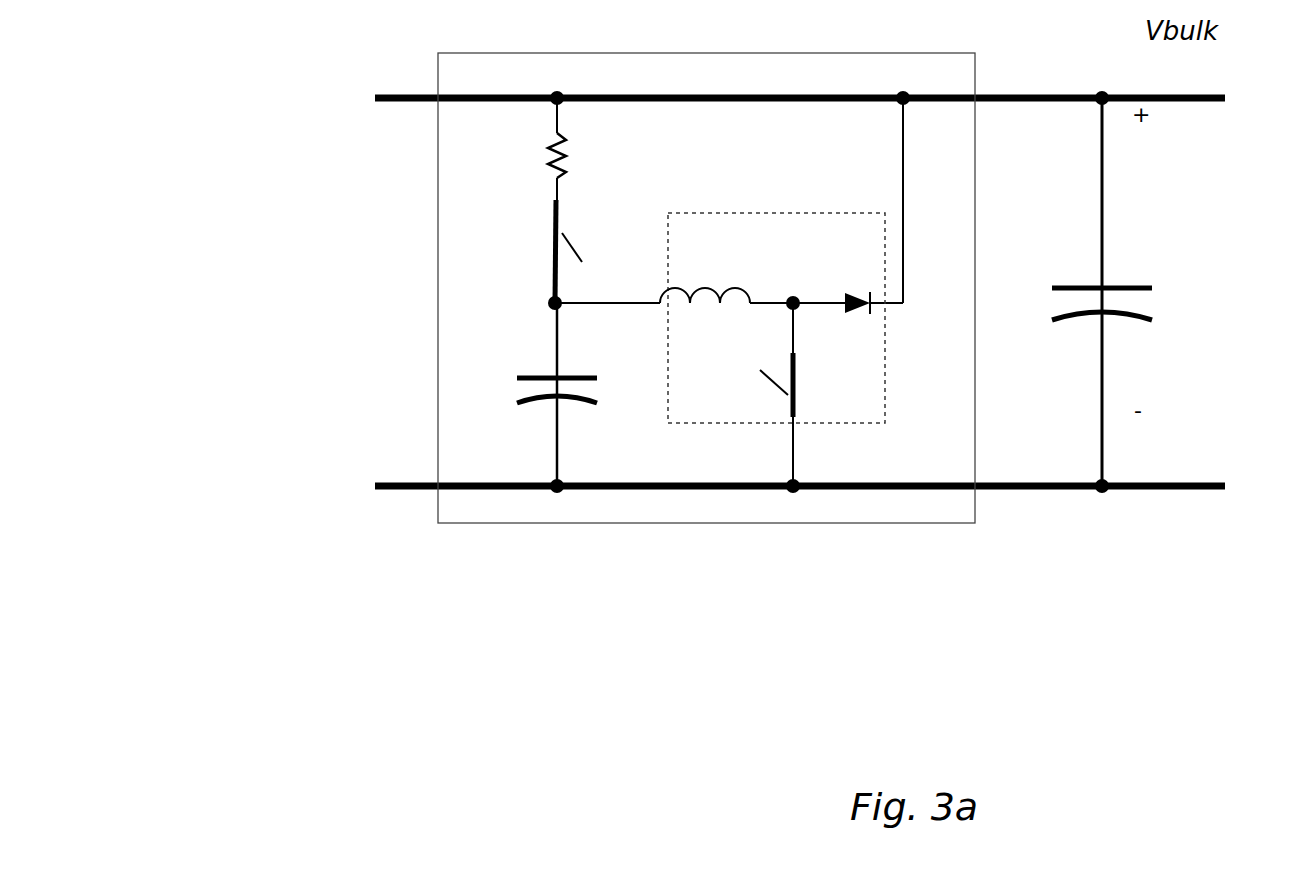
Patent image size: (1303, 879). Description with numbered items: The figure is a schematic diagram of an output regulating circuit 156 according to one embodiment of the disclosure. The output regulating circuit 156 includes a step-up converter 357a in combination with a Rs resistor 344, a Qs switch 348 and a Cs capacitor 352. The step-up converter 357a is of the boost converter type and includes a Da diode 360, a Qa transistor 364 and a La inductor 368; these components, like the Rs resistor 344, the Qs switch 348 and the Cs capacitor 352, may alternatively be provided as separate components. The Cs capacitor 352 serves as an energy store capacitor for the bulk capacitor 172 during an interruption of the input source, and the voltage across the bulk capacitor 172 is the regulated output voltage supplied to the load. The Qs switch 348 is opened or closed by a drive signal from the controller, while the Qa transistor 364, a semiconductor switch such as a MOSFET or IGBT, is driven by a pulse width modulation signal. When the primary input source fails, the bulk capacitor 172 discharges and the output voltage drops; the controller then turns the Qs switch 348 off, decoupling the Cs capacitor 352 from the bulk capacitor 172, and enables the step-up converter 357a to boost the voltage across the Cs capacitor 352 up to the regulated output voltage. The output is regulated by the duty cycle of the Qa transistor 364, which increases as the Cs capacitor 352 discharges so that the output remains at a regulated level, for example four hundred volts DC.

The output regulating circuit 156 is at (415, 152).
The Rs resistor 344 is at (625, 149).
The Qs switch 348 is at (554, 251).
The Cs capacitor 352 is at (526, 394).
The step-up converter 357a is at (914, 376).
The Da diode 360 is at (776, 299).
The Qa transistor 364 is at (781, 394).
The La inductor 368 is at (705, 239).
The Cbulk capacitor 172 is at (1128, 292).